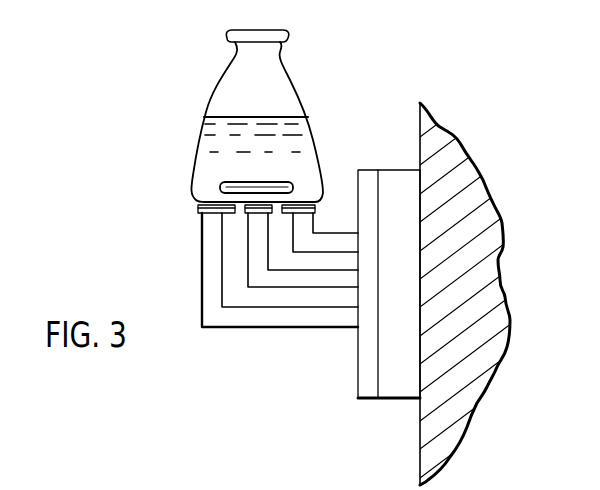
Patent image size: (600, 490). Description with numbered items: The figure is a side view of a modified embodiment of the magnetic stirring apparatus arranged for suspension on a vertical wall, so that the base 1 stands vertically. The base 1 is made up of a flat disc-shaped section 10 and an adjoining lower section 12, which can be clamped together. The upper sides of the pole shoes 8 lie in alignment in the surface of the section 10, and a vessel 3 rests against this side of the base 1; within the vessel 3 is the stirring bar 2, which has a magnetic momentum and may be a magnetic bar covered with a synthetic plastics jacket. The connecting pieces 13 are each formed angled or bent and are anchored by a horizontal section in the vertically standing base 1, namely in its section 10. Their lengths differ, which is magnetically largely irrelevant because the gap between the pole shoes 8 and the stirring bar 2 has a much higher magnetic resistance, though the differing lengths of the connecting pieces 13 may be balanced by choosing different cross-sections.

The base 1 is at (388, 166).
The stirring bar 2 is at (283, 181).
The vessel 3 is at (203, 130).
The pole shoes 8 is at (207, 202).
The flat disc-shaped section of the base 10 is at (368, 394).
The lower section of the base 12 is at (402, 394).
The connecting pieces 13 is at (323, 245).